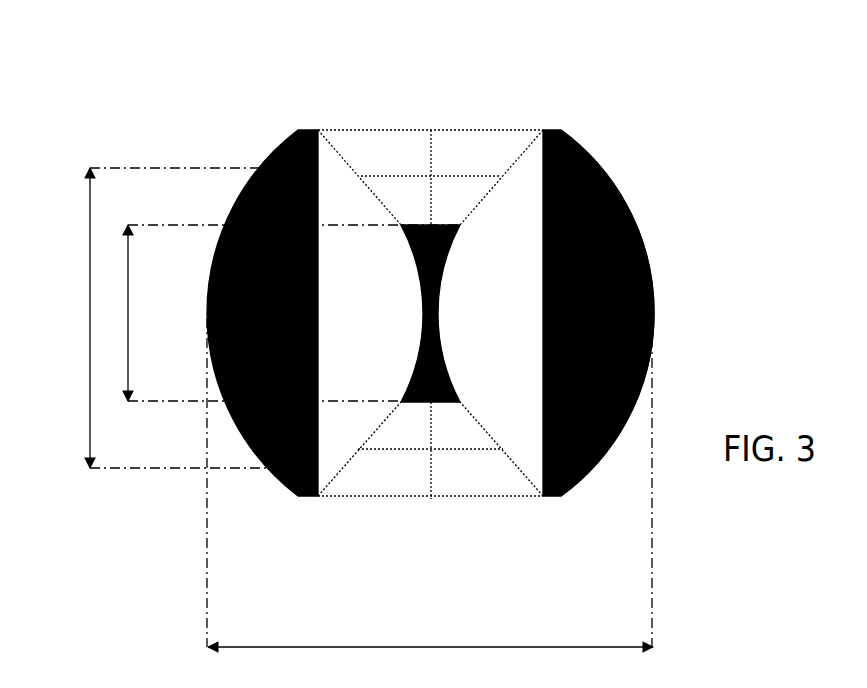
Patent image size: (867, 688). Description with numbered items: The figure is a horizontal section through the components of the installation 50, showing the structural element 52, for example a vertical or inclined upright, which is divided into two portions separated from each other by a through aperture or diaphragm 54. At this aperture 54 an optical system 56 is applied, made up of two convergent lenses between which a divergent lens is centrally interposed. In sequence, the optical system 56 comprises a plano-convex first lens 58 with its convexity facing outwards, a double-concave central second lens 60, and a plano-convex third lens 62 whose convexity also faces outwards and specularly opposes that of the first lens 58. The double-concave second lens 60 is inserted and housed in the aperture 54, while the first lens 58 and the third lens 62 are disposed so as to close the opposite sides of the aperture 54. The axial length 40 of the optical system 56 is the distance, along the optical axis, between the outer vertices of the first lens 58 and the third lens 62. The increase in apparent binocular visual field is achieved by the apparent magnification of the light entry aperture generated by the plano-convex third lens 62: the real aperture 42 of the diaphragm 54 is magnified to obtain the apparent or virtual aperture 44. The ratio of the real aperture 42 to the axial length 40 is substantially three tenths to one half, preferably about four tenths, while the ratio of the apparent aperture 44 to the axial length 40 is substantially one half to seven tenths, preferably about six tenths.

The axial length 40 is at (313, 637).
The real aperture 42 is at (120, 325).
The apparent aperture 44 is at (81, 272).
The installation 50 is at (452, 86).
The structural element 52 is at (485, 133).
The aperture 54 is at (395, 395).
The optical system 56 is at (592, 152).
The first lens 58 is at (213, 215).
The second lens 60 is at (415, 285).
The third lens 62 is at (640, 247).